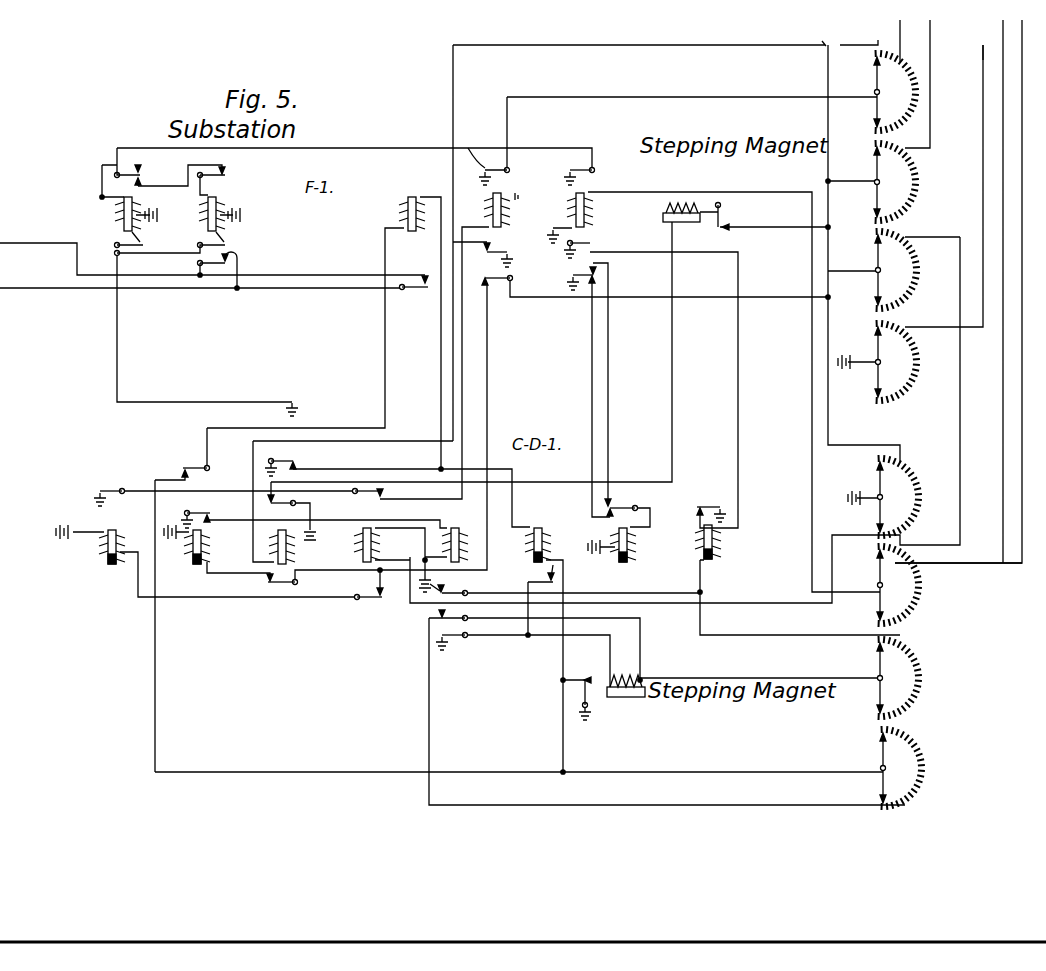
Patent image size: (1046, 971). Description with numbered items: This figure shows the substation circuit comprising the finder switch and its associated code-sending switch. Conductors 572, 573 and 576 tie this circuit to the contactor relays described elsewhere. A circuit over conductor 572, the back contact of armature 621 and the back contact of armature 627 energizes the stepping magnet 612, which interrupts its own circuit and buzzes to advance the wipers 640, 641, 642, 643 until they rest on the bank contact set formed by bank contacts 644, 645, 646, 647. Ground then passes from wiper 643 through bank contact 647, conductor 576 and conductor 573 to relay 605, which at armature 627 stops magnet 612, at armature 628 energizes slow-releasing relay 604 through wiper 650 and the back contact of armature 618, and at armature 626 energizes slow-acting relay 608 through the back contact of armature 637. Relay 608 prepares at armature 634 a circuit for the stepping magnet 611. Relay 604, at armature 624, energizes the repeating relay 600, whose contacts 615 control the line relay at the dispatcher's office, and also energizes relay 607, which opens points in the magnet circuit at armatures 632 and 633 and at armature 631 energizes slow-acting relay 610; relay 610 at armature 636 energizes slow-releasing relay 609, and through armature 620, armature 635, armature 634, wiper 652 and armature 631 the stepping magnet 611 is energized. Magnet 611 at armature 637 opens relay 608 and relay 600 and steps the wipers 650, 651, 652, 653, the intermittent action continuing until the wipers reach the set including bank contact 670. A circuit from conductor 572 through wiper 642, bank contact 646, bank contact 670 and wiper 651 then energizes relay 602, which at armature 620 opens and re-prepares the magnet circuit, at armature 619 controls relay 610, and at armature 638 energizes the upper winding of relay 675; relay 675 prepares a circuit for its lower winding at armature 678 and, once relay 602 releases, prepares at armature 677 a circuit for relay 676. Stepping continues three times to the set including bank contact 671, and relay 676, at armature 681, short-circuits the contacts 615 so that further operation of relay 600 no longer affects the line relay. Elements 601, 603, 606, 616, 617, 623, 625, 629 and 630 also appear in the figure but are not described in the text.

The conductor 572 is at (825, 45).
The conductor 573 is at (878, 43).
The conductor 576 is at (983, 46).
The repeating relay 600 is at (404, 214).
The relay 601 is at (506, 213).
The relay 602 is at (589, 213).
The relay 603 is at (108, 551).
The slow-releasing relay 604 is at (201, 548).
The relay 605 is at (293, 553).
The relay 606 is at (375, 546).
The relay 607 is at (466, 522).
The slow-acting relay 608 is at (534, 548).
The slow-releasing relay 609 is at (632, 545).
The slow-acting relay 610 is at (716, 546).
The stepping magnet 611 is at (632, 697).
The stepping magnet 612 is at (679, 213).
The armature contacts 615 is at (415, 289).
The contact 616 is at (485, 155).
The contact 617 is at (505, 248).
The armature 618 is at (498, 279).
The armature 619 is at (590, 243).
The armature 620 is at (580, 267).
The armature 621 is at (724, 220).
The contact 623 is at (100, 490).
The armature 624 is at (190, 458).
The contact 625 is at (198, 513).
The armature 626 is at (286, 462).
The armature 627 is at (270, 500).
The armature 628 is at (283, 584).
The contact 629 is at (369, 492).
The contact 630 is at (370, 598).
The armature 631 is at (458, 593).
The armature 632 is at (440, 614).
The armature 633 is at (452, 638).
The armature 634 is at (546, 578).
The armature 635 is at (622, 508).
The armature 636 is at (710, 507).
The armature 637 is at (580, 696).
The armature 638 is at (590, 170).
The wiper 640 is at (877, 115).
The wiper 641 is at (877, 170).
The wiper 642 is at (878, 258).
The wiper 643 is at (878, 343).
The bank contact 644 is at (905, 64).
The bank contact 645 is at (900, 150).
The bank contact 646 is at (900, 240).
The bank contact 647 is at (900, 330).
The wiper 650 is at (880, 482).
The wiper 651 is at (880, 577).
The wiper 652 is at (880, 667).
The wiper 653 is at (883, 750).
The bank contact 670 is at (903, 550).
The bank contact 671 is at (918, 570).
The relay 675 is at (124, 213).
The relay 676 is at (218, 205).
The armature 677 is at (134, 170).
The armature 678 is at (117, 244).
The armature 681 is at (237, 264).